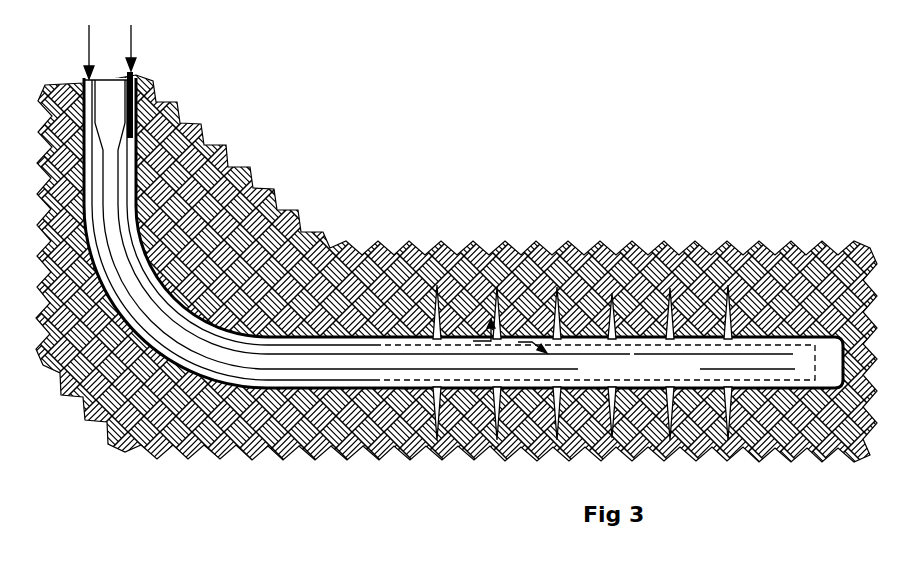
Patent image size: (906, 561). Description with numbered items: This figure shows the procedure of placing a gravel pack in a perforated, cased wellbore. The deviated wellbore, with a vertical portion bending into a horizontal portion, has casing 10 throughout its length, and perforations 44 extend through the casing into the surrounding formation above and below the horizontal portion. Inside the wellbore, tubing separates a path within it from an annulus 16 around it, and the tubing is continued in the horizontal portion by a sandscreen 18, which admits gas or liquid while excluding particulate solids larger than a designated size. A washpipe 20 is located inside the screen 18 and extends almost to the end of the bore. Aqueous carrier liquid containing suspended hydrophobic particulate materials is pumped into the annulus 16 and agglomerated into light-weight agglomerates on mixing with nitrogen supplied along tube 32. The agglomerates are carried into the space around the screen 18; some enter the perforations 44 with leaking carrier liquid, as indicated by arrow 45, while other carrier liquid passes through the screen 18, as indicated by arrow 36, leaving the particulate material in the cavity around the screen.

The casing 10 is at (366, 333).
The annulus 16 is at (88, 170).
The sandscreen 18 is at (791, 345).
The washpipe 20 is at (567, 363).
The tube 32 is at (131, 71).
The arrow 36 is at (524, 338).
The perforations 44 is at (718, 292).
The arrow 45 is at (490, 336).